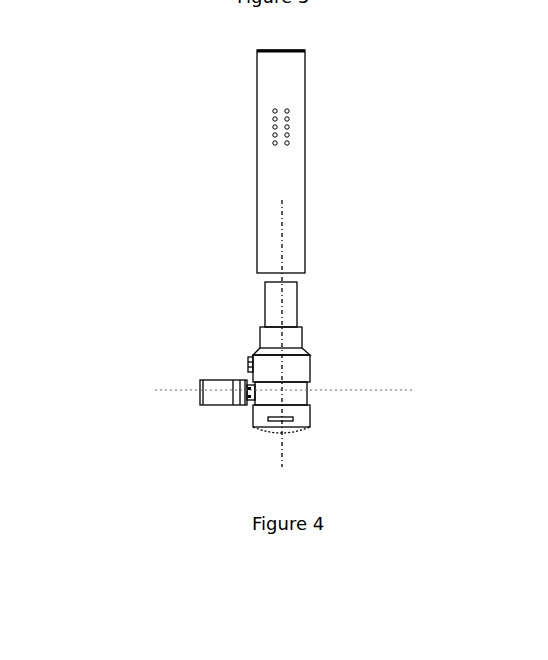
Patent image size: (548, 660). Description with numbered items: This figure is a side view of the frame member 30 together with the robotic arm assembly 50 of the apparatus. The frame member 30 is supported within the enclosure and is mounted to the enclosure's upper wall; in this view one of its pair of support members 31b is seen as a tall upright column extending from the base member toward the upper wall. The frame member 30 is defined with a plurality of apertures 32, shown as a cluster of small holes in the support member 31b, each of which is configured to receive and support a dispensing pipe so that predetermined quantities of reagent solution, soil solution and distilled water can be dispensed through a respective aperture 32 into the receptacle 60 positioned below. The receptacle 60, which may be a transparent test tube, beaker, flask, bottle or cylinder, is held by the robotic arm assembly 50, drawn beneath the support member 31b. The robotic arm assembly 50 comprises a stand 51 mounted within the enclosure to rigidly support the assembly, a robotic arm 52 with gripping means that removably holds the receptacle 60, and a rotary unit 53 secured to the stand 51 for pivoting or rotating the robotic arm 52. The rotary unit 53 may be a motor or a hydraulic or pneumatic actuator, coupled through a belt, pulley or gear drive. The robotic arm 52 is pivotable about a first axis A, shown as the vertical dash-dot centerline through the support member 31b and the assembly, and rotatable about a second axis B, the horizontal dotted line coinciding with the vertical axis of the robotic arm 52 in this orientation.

The frame member 30 is at (163, 70).
The support member 31b is at (341, 161).
The aperture 32 is at (344, 127).
The first axis A is at (332, 333).
The robotic arm assembly 50 is at (243, 333).
The receptacle 60 is at (334, 304).
The robotic arm 52 is at (330, 341).
The stand 51 is at (329, 394).
The rotary unit 53 is at (217, 378).
The second axis B is at (170, 390).